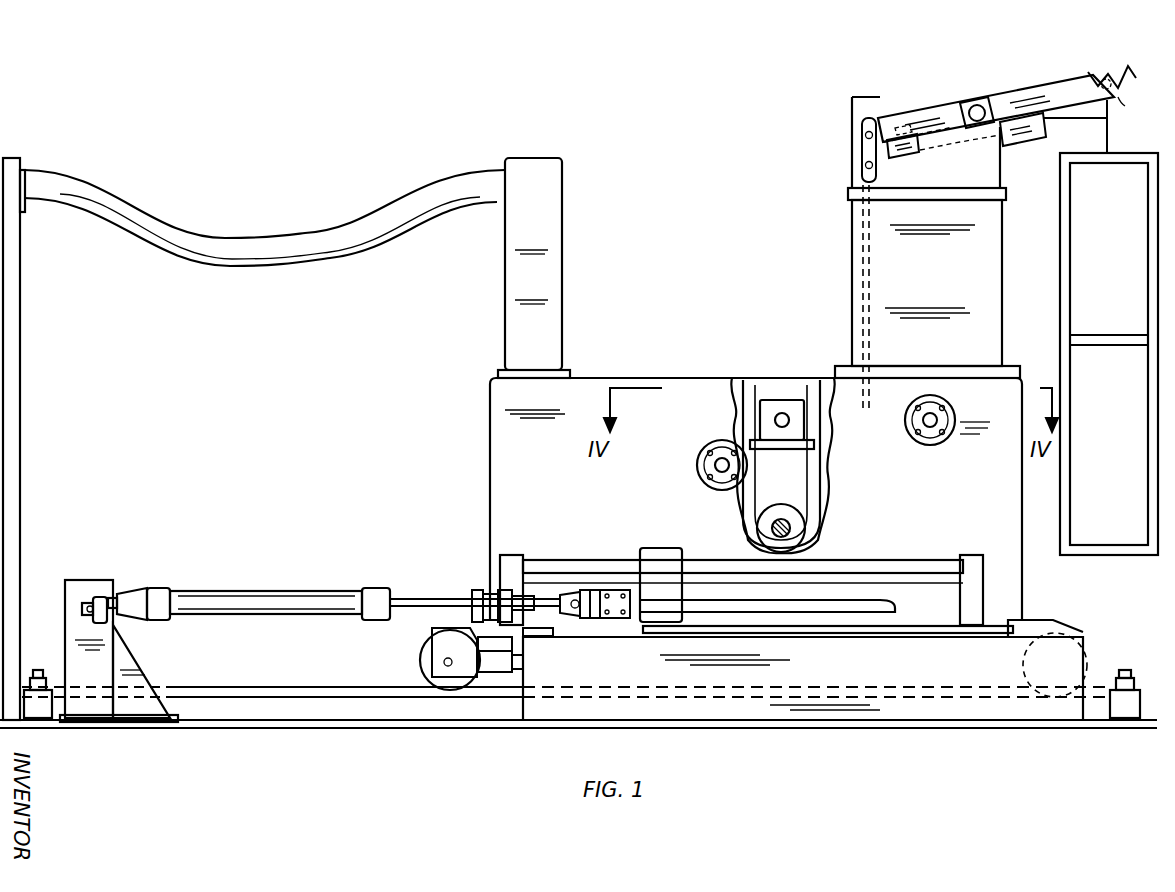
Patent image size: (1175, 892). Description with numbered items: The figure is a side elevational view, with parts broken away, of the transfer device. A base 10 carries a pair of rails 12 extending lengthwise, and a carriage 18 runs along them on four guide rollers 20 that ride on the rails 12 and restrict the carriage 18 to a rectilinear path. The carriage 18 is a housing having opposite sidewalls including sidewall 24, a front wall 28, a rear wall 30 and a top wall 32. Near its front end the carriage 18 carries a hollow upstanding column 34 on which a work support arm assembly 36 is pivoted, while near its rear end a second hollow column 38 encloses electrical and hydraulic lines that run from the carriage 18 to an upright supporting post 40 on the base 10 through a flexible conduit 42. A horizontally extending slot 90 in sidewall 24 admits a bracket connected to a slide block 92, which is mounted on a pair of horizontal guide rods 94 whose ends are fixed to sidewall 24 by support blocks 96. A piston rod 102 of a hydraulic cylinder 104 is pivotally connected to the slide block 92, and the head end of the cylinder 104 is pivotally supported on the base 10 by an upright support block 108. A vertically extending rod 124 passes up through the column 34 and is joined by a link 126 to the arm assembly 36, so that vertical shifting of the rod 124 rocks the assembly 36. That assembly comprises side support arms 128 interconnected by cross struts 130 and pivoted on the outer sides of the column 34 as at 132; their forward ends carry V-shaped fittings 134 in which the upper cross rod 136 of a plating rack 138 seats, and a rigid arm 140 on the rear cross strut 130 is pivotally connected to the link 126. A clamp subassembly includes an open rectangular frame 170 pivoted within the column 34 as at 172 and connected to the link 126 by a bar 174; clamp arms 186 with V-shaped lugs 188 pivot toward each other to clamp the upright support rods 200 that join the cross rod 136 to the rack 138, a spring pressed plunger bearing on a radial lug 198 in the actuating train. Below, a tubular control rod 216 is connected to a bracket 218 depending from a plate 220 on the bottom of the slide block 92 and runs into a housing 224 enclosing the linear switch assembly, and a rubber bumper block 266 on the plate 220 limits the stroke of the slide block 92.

The base 10 is at (95, 735).
The rails 12 is at (240, 667).
The carriage 18 is at (600, 372).
The guide rollers 20 is at (420, 660).
The sidewall 24 is at (952, 498).
The front wall 28 is at (1022, 585).
The rear wall 30 is at (490, 500).
The top wall 32 is at (745, 378).
The hollow upstanding column 34 is at (852, 238).
The work support arm assembly 36 is at (1000, 95).
The second hollow column 38 is at (562, 298).
The upright supporting post 40 is at (22, 458).
The flexible conduit 42 is at (207, 258).
The slot 90 is at (880, 625).
The slide block 92 is at (658, 548).
The guide rods 94 is at (855, 565).
The support blocks 96 is at (512, 560).
The piston rod 102 is at (418, 596).
The hydraulic cylinder 104 is at (290, 572).
The upright support block 108 is at (82, 585).
The vertically extending rod 124 is at (872, 298).
The link 126 is at (860, 155).
The side support arms 128 is at (1020, 92).
The cross struts 130 is at (900, 122).
The pivot 132 is at (972, 100).
The V-shaped fittings 134 is at (1139, 97).
The upper cross rod 136 is at (1108, 80).
The plating rack 138 is at (1128, 555).
The rigid arm 140 is at (869, 118).
The open rectangular frame 170 is at (1022, 140).
The pivot 172 is at (975, 135).
The bar 174 is at (903, 158).
The clamp arms 186 is at (1075, 135).
The V-shaped lug 188 is at (1132, 117).
The radial lug 198 is at (632, 602).
The upright support rods 200 is at (1107, 145).
The tubular control rod 216 is at (516, 664).
The bracket 218 is at (478, 640).
The plate 220 is at (572, 626).
The housing 224 is at (945, 675).
The rubber bumper block 266 is at (500, 592).